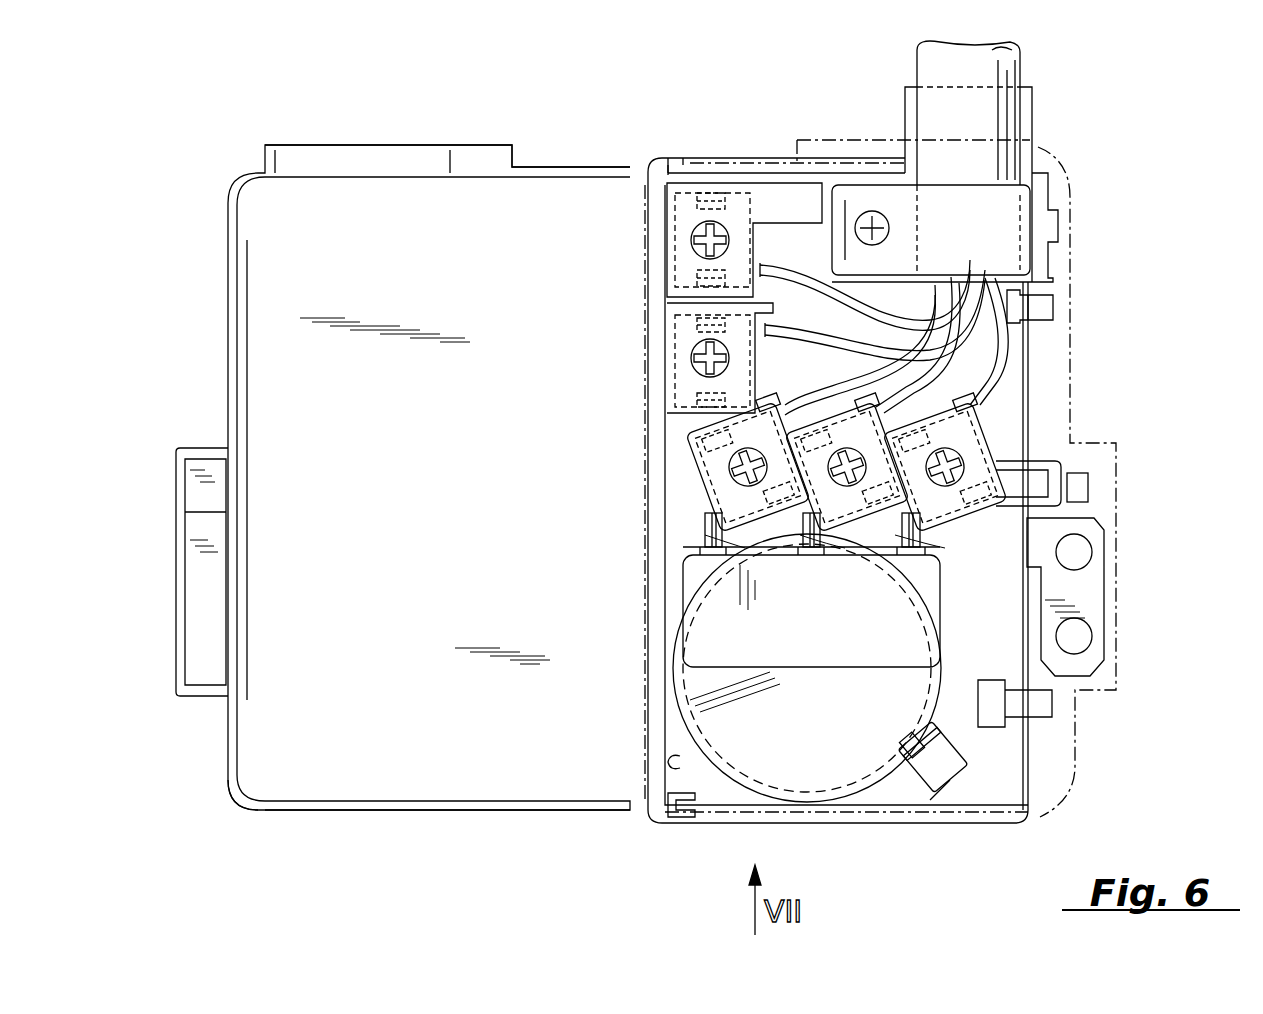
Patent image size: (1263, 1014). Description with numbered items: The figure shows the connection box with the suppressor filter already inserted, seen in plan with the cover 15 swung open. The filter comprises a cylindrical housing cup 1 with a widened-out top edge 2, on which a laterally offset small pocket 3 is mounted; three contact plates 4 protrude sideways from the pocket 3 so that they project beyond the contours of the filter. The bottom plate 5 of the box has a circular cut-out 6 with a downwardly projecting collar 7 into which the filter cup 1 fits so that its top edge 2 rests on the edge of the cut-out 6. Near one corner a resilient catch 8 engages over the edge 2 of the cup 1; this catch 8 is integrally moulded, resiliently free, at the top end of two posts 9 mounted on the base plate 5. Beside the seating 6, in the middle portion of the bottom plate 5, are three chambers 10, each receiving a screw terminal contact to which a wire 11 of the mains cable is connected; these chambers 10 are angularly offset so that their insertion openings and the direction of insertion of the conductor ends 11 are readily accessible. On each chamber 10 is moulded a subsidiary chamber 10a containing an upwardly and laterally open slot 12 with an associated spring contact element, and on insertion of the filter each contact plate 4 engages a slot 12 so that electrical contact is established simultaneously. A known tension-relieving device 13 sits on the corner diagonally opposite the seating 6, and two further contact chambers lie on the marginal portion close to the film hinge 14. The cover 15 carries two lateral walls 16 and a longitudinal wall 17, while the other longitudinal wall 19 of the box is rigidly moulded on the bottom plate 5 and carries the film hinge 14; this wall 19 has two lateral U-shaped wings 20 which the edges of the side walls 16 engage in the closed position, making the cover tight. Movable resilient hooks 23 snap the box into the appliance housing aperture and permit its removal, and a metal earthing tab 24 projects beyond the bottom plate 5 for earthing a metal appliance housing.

The housing cup 1 is at (884, 790).
The top edge 2 is at (848, 810).
The pocket 3 is at (845, 660).
The contact plate 4 is at (703, 525).
The bottom plate 5 is at (995, 790).
The cut-out 6 is at (738, 762).
The collar 7 is at (420, 725).
The resilient catch 8 is at (905, 748).
The post 9 is at (950, 790).
The contact chamber 10 is at (730, 195).
The subsidiary chamber 10a is at (683, 540).
The wire 11 is at (960, 290).
The slot 12 is at (703, 518).
The tension-relieving device 13 is at (1000, 210).
The film hinge 14 is at (645, 275).
The cover 15 is at (352, 815).
The lateral wall 16 is at (548, 167).
The longitudinal wall 17 is at (228, 348).
The longitudinal wall 19 is at (668, 764).
The U-shaped wing 20 is at (683, 157).
The resilient hook 23 is at (1053, 305).
The earthing tab 24 is at (1095, 580).